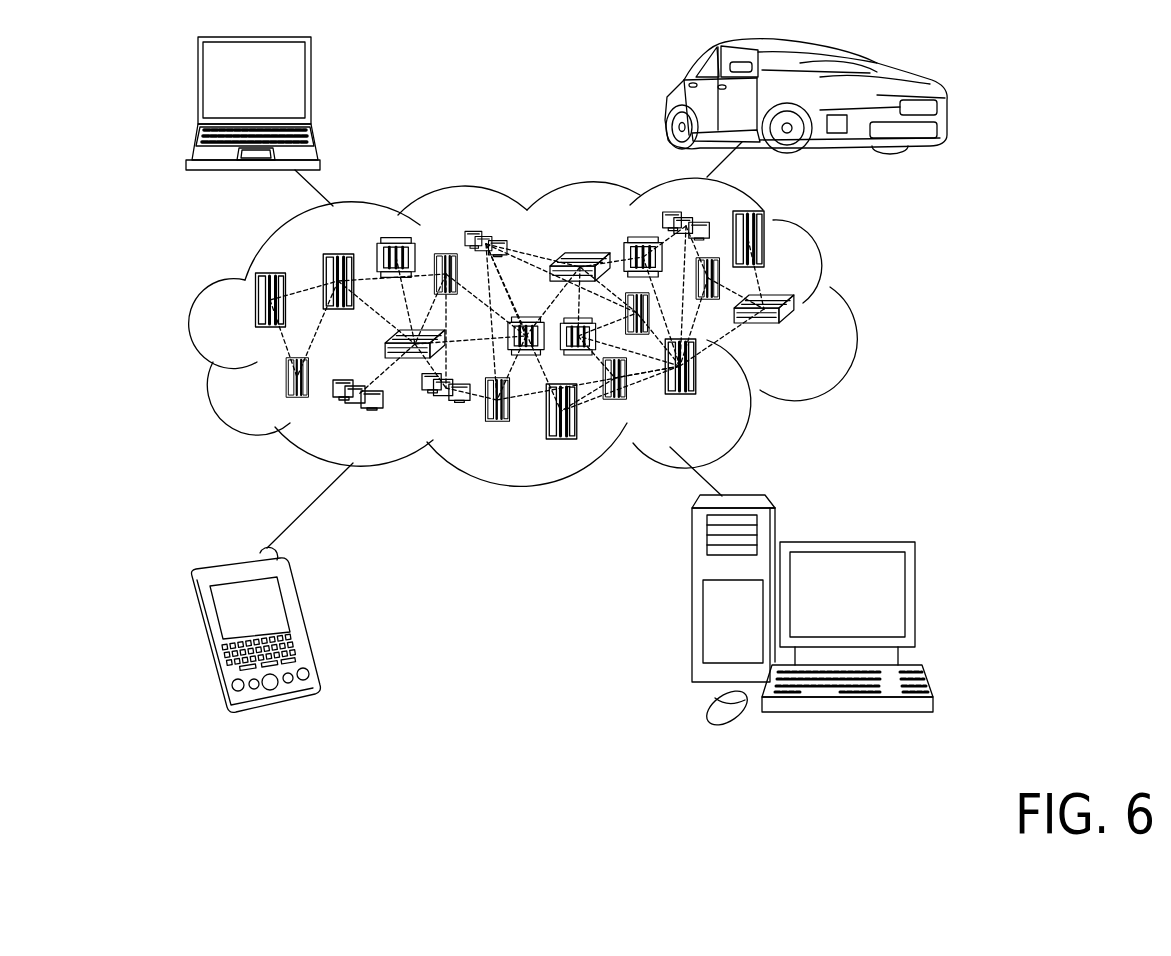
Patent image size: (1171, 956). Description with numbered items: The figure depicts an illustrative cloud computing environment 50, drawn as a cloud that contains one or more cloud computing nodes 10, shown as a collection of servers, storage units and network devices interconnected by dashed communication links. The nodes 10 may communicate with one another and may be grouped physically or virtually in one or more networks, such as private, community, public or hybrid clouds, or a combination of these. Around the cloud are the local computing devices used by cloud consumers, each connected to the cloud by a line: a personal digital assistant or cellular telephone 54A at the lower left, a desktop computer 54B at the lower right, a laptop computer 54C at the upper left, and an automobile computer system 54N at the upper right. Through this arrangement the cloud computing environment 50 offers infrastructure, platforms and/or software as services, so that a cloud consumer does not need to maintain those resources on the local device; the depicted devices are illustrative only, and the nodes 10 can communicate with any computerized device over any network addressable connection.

The cloud computing nodes 10 is at (800, 332).
The cloud computing environment 50 is at (847, 305).
The personal digital assistant (PDA) or cellular telephone 54A is at (303, 617).
The desktop computer 54B is at (843, 542).
The laptop computer 54C is at (312, 86).
The automobile computer system 54N is at (666, 100).